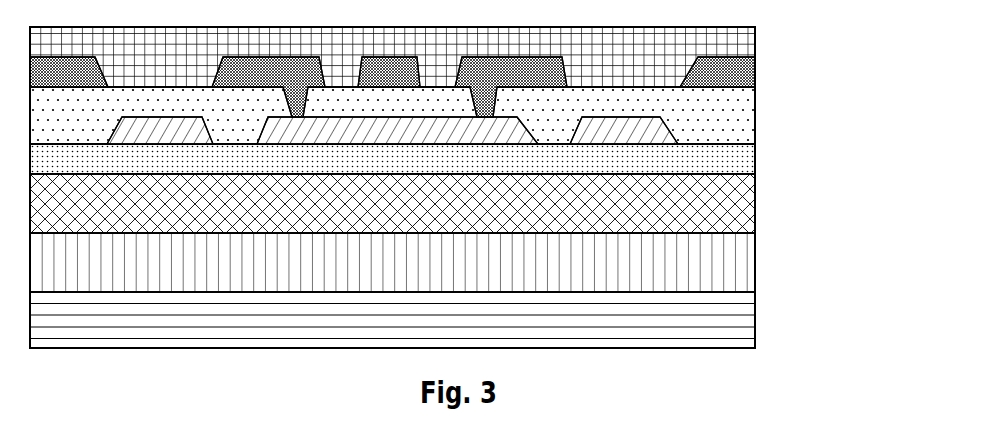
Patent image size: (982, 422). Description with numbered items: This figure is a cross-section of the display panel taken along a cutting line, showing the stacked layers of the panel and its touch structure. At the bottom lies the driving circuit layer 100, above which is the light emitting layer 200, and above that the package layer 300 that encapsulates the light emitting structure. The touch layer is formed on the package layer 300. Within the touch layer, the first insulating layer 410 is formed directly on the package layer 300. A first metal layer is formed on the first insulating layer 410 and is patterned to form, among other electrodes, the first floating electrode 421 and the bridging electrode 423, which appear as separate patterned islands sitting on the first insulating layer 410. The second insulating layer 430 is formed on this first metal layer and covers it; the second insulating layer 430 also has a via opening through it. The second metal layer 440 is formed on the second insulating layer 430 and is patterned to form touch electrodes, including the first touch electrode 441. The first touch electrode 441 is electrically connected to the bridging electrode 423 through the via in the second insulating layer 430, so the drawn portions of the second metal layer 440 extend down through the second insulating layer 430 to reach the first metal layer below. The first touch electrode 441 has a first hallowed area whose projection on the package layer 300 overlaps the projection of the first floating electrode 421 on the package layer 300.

The driving circuit layer 100 is at (725, 320).
The light emitting layer 200 is at (725, 262).
The package layer 300 is at (727, 212).
The first insulating layer 410 is at (725, 165).
The first floating electrode 421 is at (493, 128).
The bridging electrode 423 is at (587, 115).
The second insulating layer 430 is at (727, 101).
The second metal layer 440 is at (727, 42).
The first touch electrode 441 is at (727, 72).